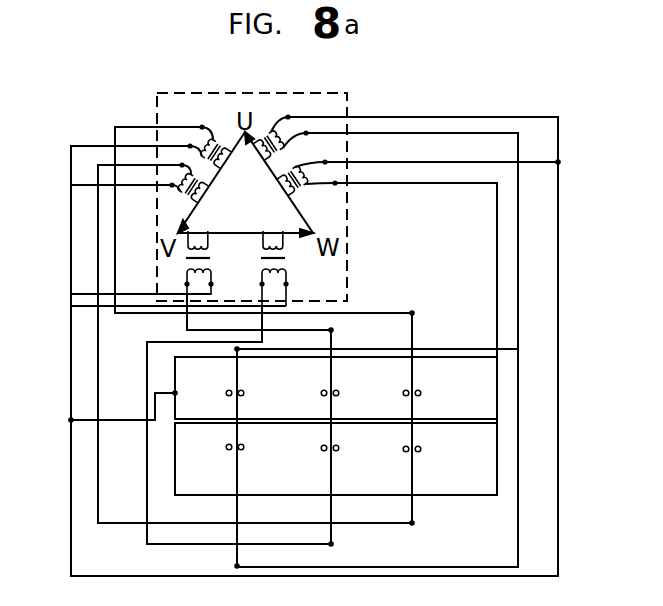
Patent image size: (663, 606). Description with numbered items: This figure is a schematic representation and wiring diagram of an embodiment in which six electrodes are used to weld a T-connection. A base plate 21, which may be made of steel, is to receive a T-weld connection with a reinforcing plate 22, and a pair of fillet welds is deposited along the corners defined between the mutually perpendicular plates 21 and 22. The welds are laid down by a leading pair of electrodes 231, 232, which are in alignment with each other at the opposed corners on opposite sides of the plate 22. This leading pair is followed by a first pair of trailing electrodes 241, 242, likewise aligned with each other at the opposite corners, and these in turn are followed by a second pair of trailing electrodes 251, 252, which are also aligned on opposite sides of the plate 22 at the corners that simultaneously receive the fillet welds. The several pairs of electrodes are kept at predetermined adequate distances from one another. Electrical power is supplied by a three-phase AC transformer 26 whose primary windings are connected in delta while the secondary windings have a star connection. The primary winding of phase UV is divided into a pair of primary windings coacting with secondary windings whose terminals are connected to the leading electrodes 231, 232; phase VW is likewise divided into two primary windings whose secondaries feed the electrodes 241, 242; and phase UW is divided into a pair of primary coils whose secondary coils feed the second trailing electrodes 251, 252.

The base plate 21 is at (488, 376).
The reinforcing plate 22 is at (497, 423).
The leading electrode 231 is at (412, 380).
The leading electrode 232 is at (412, 477).
The first trailing electrode 241 is at (331, 382).
The first trailing electrode 242 is at (331, 475).
The second trailing electrode 251 is at (237, 382).
The second trailing electrode 252 is at (237, 470).
The three-phase AC transformer 26 is at (349, 95).